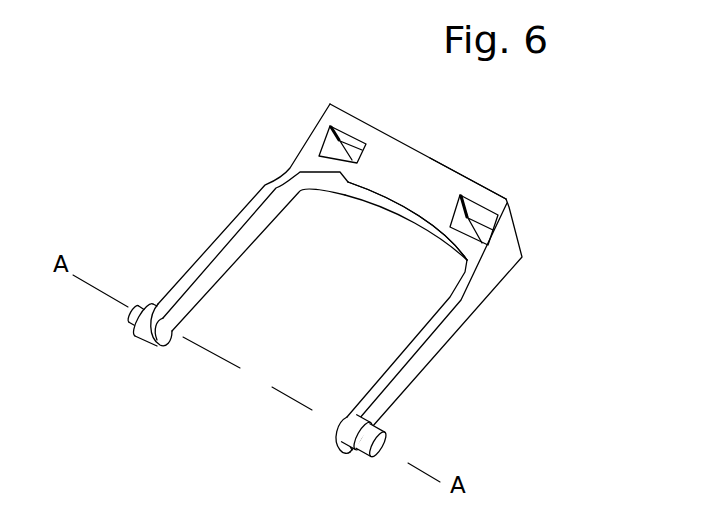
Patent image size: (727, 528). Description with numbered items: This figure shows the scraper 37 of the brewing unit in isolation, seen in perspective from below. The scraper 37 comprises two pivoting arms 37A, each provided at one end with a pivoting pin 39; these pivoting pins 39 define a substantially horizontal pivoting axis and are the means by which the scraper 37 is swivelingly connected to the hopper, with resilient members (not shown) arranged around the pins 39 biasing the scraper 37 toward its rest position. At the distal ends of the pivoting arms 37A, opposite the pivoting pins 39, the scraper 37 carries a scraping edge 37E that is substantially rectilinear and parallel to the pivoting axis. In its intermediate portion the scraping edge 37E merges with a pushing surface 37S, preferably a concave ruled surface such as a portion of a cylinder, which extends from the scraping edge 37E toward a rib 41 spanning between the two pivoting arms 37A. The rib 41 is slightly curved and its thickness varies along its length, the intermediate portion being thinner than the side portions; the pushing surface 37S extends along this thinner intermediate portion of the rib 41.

The scraper 37 is at (366, 279).
The pushing surface 37S is at (407, 172).
The scraping edge 37E is at (457, 173).
The pivoting arms 37A is at (230, 224).
The pivoting pins 39 is at (133, 322).
The rib 41 is at (390, 208).